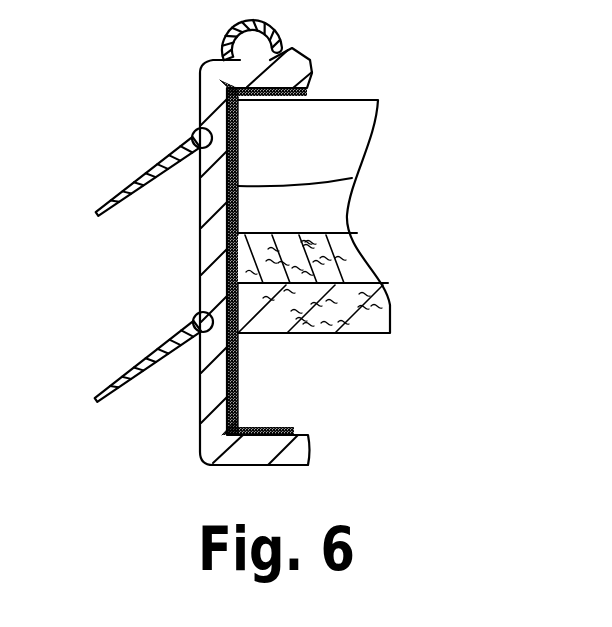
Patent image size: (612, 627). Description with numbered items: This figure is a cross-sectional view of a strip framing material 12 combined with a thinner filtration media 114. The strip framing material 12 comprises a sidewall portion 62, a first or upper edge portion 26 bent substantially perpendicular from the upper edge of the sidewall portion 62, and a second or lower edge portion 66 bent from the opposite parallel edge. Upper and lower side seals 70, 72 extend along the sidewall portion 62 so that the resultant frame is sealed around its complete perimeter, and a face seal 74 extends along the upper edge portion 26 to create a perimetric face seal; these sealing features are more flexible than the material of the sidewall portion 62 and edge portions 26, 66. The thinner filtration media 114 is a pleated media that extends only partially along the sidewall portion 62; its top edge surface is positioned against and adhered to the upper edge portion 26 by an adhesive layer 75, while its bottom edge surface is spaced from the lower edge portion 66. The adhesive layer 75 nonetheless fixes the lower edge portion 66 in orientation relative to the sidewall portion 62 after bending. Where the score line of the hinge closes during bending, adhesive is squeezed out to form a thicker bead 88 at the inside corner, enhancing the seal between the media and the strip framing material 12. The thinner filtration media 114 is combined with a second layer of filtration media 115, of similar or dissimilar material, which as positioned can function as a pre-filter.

The strip framing material 12 is at (173, 117).
The first edge portion 26 is at (314, 75).
The sidewall portion 62 is at (218, 280).
The second edge portion 66 is at (297, 450).
The upper side seal 70 is at (123, 200).
The lower side seal 72 is at (120, 377).
The face seal 74 is at (226, 34).
The adhesive layer 75 is at (352, 178).
The bead of adhesive 88 is at (244, 423).
The thinner filtration media 114 is at (333, 202).
The second layer of filtration media 115 is at (391, 304).